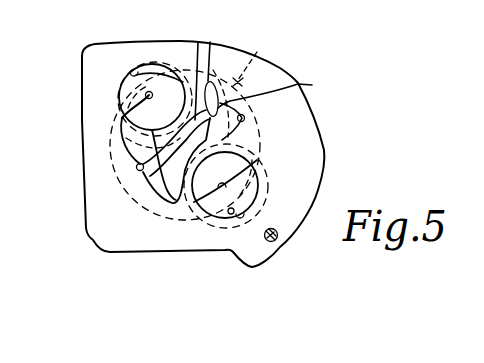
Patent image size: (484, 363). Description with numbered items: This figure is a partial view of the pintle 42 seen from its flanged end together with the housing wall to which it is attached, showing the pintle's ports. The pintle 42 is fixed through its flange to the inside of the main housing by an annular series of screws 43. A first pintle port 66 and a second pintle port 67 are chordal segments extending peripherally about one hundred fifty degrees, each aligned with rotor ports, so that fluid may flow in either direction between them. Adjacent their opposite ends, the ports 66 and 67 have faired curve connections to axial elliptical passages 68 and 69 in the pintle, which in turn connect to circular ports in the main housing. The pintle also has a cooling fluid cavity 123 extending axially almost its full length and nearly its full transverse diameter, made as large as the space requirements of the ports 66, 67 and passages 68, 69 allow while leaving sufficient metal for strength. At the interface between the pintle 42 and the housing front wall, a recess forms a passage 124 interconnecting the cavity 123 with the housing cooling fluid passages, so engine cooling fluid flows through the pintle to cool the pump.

The pintle 42 is at (97, 187).
The screws 43 is at (277, 241).
The first pintle port 66 is at (135, 213).
The second pintle port 67 is at (200, 118).
The axial elliptical passage 68 is at (151, 92).
The axial elliptical passage 69 is at (222, 188).
The pintle cooling fluid cavity 123 is at (136, 167).
The passage 124 is at (274, 95).